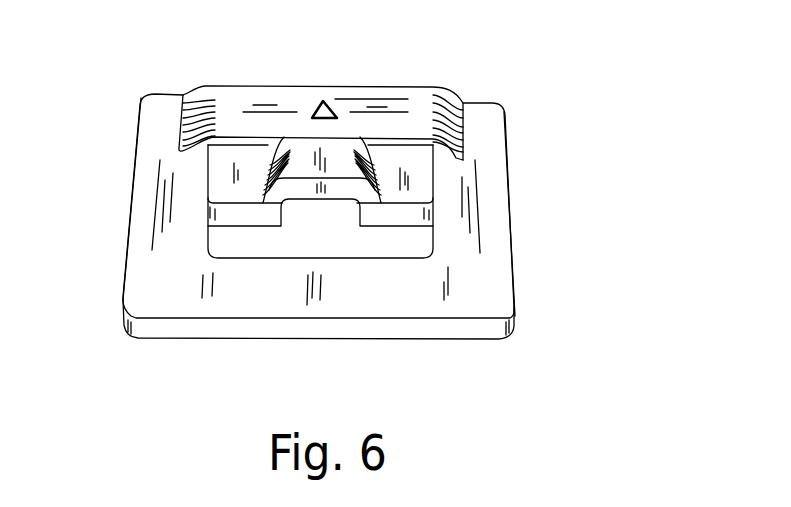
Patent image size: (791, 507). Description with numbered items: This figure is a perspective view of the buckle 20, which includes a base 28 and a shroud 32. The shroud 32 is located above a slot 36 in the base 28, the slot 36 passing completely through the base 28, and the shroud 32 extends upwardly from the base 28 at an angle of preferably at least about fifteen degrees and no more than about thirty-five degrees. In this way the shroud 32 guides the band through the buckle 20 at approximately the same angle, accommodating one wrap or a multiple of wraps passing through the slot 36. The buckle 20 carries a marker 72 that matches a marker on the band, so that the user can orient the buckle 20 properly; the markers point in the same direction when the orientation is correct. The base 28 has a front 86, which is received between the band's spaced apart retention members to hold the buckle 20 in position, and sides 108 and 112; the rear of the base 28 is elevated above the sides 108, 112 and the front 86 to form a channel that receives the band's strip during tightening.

The buckle 20 is at (407, 209).
The base 28 is at (341, 247).
The shroud 32 is at (415, 172).
The slot 36 is at (338, 246).
The marker 72 is at (331, 107).
The front 86 is at (287, 297).
The side 108 is at (134, 174).
The side 112 is at (510, 195).